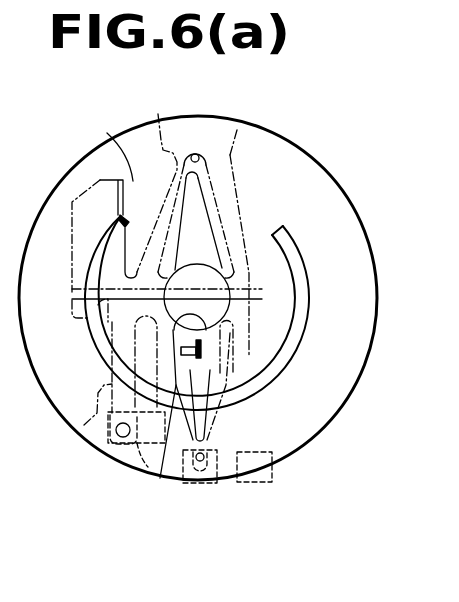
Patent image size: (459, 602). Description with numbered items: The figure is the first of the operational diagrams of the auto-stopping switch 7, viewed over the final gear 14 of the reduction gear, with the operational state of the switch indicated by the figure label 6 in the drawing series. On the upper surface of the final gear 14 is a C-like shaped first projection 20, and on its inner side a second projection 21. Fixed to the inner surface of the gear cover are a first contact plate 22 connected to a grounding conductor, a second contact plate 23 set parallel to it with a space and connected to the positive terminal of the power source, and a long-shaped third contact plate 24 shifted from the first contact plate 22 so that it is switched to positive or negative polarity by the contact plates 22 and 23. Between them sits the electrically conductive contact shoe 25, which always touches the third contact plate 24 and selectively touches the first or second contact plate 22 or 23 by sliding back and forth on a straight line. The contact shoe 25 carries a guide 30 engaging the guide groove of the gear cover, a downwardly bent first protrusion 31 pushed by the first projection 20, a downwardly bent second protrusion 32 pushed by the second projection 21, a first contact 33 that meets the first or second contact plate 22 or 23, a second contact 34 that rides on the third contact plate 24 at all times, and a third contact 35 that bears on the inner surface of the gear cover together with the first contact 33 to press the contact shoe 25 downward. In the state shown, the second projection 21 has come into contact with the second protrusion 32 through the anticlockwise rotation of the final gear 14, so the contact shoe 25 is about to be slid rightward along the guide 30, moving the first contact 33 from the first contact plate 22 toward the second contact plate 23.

The shaft 6 is at (213, 270).
The auto-stopping switch 7 is at (285, 190).
The final gear 14 is at (370, 366).
The first projection 20 is at (298, 240).
The second projection 21 is at (160, 478).
The first contact plate 22 is at (198, 485).
The second contact plate 23 is at (276, 470).
The third contact plate 24 is at (125, 457).
The contact shoe 25 is at (214, 177).
The guide 30 is at (88, 355).
The first protrusion 31 is at (107, 133).
The second protrusion 32 is at (208, 340).
The first contact 33 is at (222, 437).
The second contact 34 is at (84, 425).
The third contact 35 is at (158, 114).